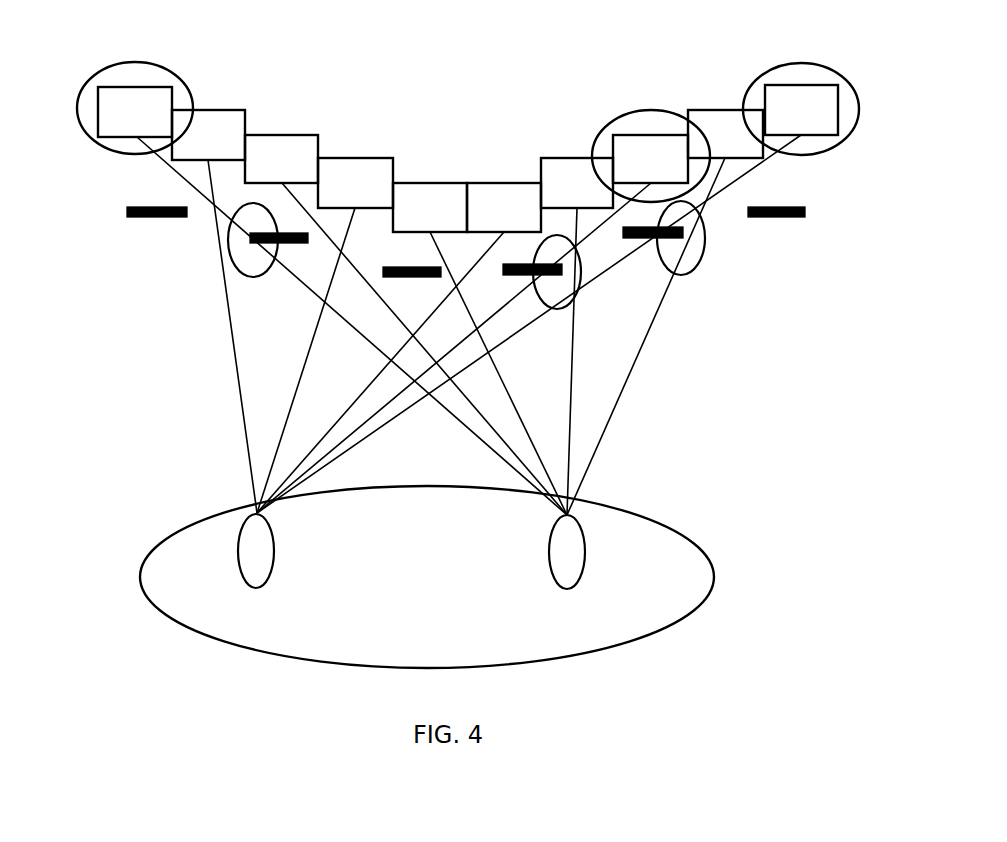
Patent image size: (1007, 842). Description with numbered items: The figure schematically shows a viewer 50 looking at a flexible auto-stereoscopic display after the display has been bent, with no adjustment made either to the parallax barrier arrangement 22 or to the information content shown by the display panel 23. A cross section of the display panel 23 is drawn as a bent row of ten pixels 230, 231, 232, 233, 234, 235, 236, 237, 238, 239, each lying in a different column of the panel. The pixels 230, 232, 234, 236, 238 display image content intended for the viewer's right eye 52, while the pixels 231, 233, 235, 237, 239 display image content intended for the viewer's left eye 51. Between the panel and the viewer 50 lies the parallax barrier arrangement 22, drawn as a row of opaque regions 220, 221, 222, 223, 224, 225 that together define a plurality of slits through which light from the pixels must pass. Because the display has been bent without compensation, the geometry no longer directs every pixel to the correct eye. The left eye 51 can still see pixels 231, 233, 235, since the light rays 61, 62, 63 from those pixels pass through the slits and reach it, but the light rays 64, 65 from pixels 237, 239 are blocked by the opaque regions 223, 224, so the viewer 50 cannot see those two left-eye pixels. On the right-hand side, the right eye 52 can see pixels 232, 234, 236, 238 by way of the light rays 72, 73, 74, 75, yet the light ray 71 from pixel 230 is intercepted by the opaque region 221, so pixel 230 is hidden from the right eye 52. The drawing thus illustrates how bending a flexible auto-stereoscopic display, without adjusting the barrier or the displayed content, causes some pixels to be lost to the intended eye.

The parallax barrier arrangement 22 is at (112, 211).
The display panel 23 is at (91, 66).
The viewer 50 is at (672, 536).
The left eye 51 is at (275, 546).
The right eye 52 is at (549, 556).
The light ray 61 is at (244, 438).
The light ray 62 is at (298, 382).
The light ray 63 is at (356, 402).
The light ray 64 is at (386, 416).
The light ray 65 is at (356, 448).
The light ray 71 is at (494, 449).
The light ray 72 is at (466, 404).
The light ray 73 is at (514, 402).
The light ray 74 is at (574, 376).
The light ray 75 is at (596, 446).
The opaque region 220 is at (172, 218).
The opaque region 221 is at (292, 244).
The opaque region 222 is at (410, 278).
The opaque region 223 is at (512, 276).
The opaque region 224 is at (645, 240).
The opaque region 225 is at (792, 218).
The pixel 230 is at (90, 112).
The pixel 231 is at (232, 98).
The pixel 232 is at (298, 123).
The pixel 233 is at (372, 145).
The pixel 234 is at (440, 170).
The pixel 235 is at (508, 170).
The pixel 236 is at (577, 158).
The pixel 237 is at (611, 112).
The pixel 238 is at (722, 110).
The pixel 239 is at (760, 66).